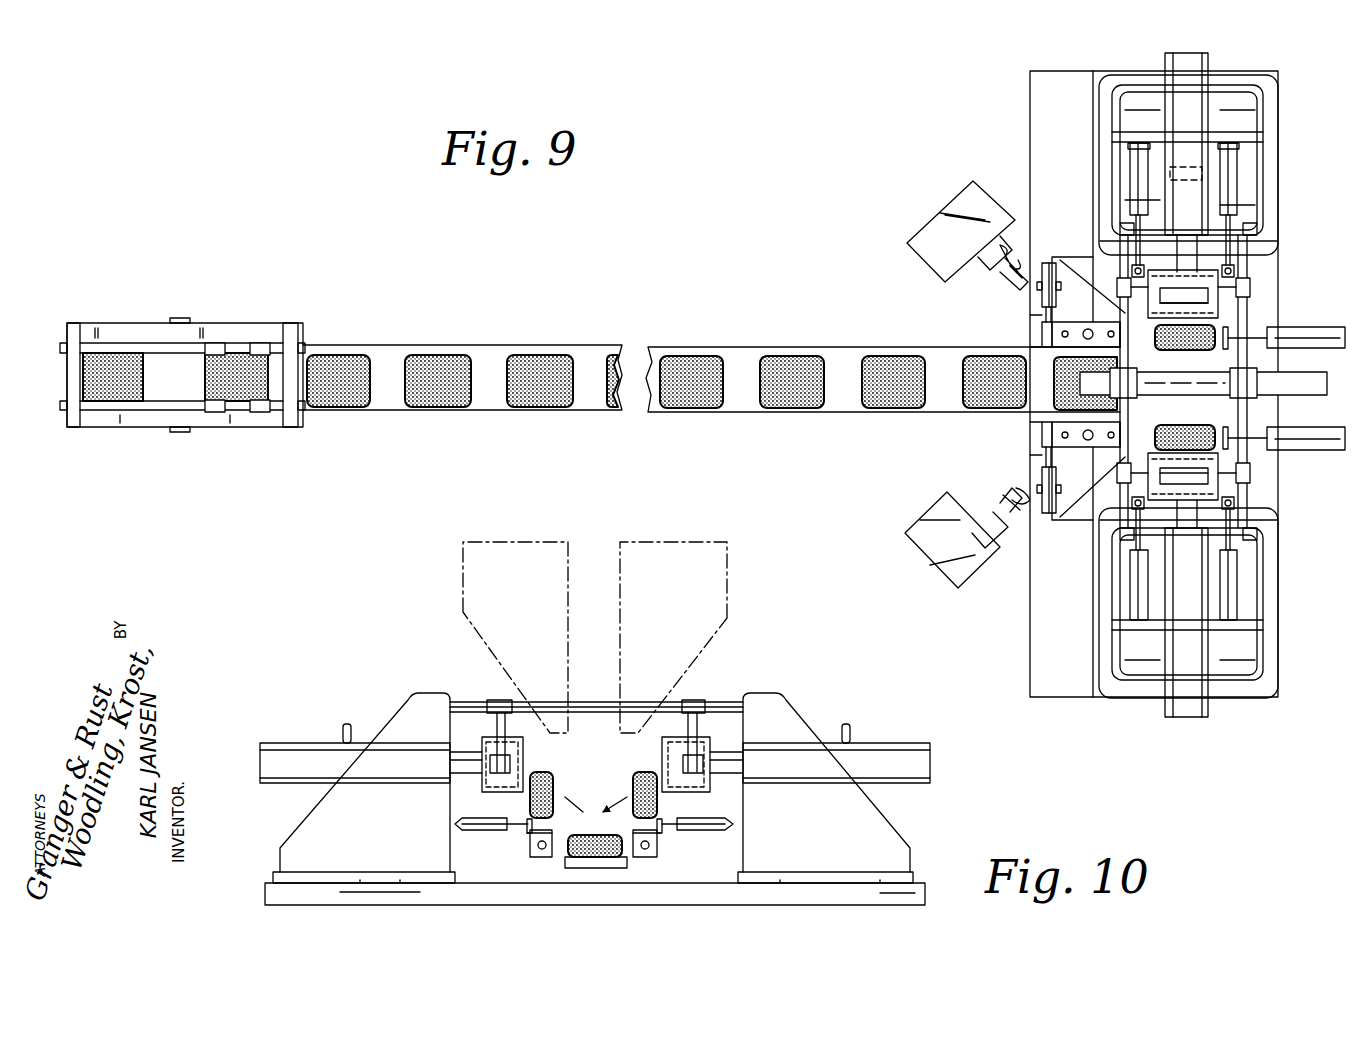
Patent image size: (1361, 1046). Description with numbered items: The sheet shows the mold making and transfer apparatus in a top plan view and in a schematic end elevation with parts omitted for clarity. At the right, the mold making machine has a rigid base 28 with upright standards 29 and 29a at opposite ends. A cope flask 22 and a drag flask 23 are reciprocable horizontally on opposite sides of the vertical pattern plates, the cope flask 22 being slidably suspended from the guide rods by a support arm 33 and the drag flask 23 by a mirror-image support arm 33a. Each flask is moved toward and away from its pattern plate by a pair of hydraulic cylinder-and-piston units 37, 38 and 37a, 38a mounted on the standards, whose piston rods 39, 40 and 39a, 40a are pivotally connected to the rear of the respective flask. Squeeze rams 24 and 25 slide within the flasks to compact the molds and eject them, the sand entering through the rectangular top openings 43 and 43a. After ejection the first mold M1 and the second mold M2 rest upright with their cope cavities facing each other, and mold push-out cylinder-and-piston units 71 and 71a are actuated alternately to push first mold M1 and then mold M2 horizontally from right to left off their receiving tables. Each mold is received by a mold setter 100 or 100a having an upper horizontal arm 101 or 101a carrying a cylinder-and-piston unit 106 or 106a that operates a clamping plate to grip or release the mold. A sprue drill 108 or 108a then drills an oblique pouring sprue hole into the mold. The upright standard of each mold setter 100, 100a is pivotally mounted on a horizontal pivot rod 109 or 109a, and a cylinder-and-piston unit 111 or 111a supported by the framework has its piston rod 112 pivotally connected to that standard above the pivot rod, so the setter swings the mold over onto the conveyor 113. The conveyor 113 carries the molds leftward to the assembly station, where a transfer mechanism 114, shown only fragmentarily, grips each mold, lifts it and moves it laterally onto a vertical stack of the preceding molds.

In FIG. 9, the conveyor 113 is at (740, 355).
In FIG. 10, the conveyor 113 is at (610, 866).
In FIG. 9, the transfer mechanism 114 is at (240, 343).
In FIG. 9, the rigid base 28 is at (1278, 120).
In FIG. 9, the upright standard 29 is at (1265, 180).
In FIG. 10, the upright standard 29 is at (768, 712).
In FIG. 10, the upright standard 29a is at (418, 705).
In FIG. 9, the cylinder-and-piston unit 37 is at (1237, 155).
In FIG. 9, the cylinder-and-piston unit 37a is at (1237, 595).
In FIG. 9, the cylinder-and-piston unit 38 is at (1130, 168).
In FIG. 9, the cylinder-and-piston unit 38a is at (1130, 598).
In FIG. 9, the piston rod 39 is at (1248, 248).
In FIG. 9, the piston rod 39a is at (1248, 540).
In FIG. 9, the piston rod 40 is at (1138, 222).
In FIG. 9, the piston rod 40a is at (1138, 538).
In FIG. 9, the cope flask 22 is at (1218, 275).
In FIG. 10, the cope flask 22 is at (668, 755).
In FIG. 9, the drag flask 23 is at (1218, 460).
In FIG. 10, the drag flask 23 is at (500, 778).
In FIG. 9, the squeeze ram 24 is at (1208, 303).
In FIG. 9, the squeeze ram 25 is at (1208, 476).
In FIG. 9, the rectangular top opening 43 is at (1208, 295).
In FIG. 9, the rectangular top opening 43a is at (1160, 473).
In FIG. 10, the support arm 33 is at (693, 722).
In FIG. 10, the support arm 33a is at (495, 720).
In FIG. 9, the mold push-out cylinder-and-piston unit 71 is at (1325, 340).
In FIG. 9, the mold push-out cylinder-and-piston unit 71a is at (1305, 445).
In FIG. 9, the first mold M1 is at (1195, 340).
In FIG. 10, the first mold M1 is at (633, 778).
In FIG. 9, the second mold M2 is at (1192, 426).
In FIG. 10, the second mold M2 is at (540, 775).
In FIG. 9, the mold setter 100 is at (1042, 335).
In FIG. 10, the mold setter 100 is at (665, 838).
In FIG. 9, the mold setter 100a is at (1042, 440).
In FIG. 10, the mold setter 100a is at (533, 845).
In FIG. 9, the upper horizontal arm 101 is at (1070, 333).
In FIG. 9, the upper horizontal arm 101a is at (1048, 426).
In FIG. 9, the cylinder-and-piston unit 106 is at (1114, 338).
In FIG. 9, the cylinder-and-piston unit 106a is at (1093, 446).
In FIG. 9, the sprue drill 108 is at (992, 283).
In FIG. 9, the sprue drill 108a is at (1000, 490).
In FIG. 10, the horizontal pivot rod 109 is at (647, 848).
In FIG. 10, the horizontal pivot rod 109a is at (545, 858).
In FIG. 9, the cylinder-and-piston unit 111 is at (1048, 263).
In FIG. 10, the cylinder-and-piston unit 111 is at (705, 833).
In FIG. 9, the cylinder-and-piston unit 111a is at (1046, 513).
In FIG. 10, the cylinder-and-piston unit 111a is at (478, 832).
In FIG. 9, the piston rod 112 is at (1046, 315).
In FIG. 10, the piston rod 112 is at (665, 825).